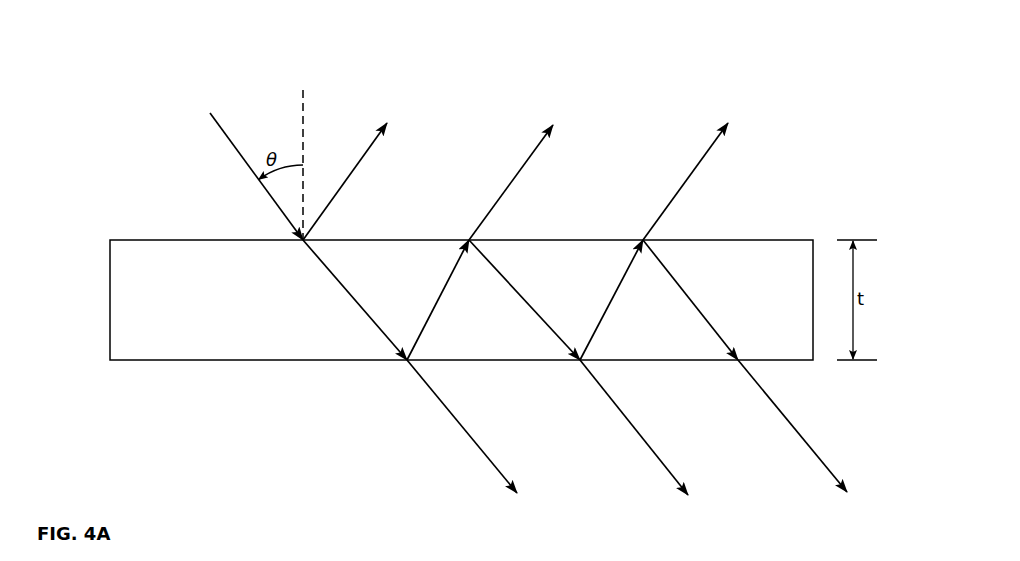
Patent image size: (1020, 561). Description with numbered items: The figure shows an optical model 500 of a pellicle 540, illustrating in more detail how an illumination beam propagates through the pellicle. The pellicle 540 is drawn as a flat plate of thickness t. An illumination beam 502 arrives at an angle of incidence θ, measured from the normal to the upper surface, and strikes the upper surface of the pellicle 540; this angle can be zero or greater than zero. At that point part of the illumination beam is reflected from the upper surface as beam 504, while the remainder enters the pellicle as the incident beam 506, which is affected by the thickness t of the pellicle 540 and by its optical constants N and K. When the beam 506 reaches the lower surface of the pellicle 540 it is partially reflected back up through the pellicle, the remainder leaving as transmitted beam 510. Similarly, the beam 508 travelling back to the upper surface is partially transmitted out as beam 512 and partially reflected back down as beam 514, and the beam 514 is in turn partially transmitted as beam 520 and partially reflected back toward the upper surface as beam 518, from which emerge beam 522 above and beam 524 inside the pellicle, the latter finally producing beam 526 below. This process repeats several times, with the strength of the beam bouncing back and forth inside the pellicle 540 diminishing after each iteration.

The optical model 500 is at (553, 50).
The illumination beam 502 is at (244, 164).
The reflected beam 504 is at (346, 181).
The incident beam 506 is at (355, 300).
The beam 508 is at (438, 300).
The first transmitted beam 510 is at (462, 426).
The second reflected beam exiting front surface 512 is at (511, 182).
The beam 514 is at (524, 300).
The beam 518 is at (612, 300).
The second transmitted beam 520 is at (634, 427).
The third reflected beam exiting front surface 522 is at (685, 181).
The third internal beam 524 is at (690, 300).
The third transmitted beam 526 is at (792, 426).
The pellicle 540 is at (461, 300).